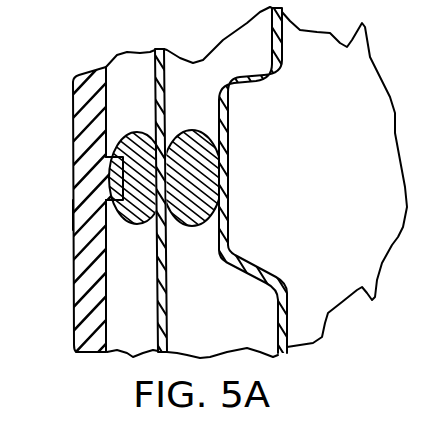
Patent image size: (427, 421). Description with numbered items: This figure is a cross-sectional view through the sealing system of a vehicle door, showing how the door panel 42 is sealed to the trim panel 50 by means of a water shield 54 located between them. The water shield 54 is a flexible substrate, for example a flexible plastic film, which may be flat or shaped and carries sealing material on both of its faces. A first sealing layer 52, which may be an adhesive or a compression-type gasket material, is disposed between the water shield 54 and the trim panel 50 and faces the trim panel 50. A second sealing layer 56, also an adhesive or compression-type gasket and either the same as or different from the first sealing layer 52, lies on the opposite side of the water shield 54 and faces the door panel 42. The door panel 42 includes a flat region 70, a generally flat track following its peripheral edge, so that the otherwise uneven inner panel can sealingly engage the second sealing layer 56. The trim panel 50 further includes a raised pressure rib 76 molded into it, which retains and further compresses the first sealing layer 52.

The door panel 42 is at (287, 317).
The trim panel 50 is at (73, 278).
The first sealing layer 52 is at (128, 224).
The water shield 54 is at (167, 300).
The second sealing layer 56 is at (192, 227).
The flat region 70 is at (219, 100).
The raised pressure rib 76 is at (73, 212).